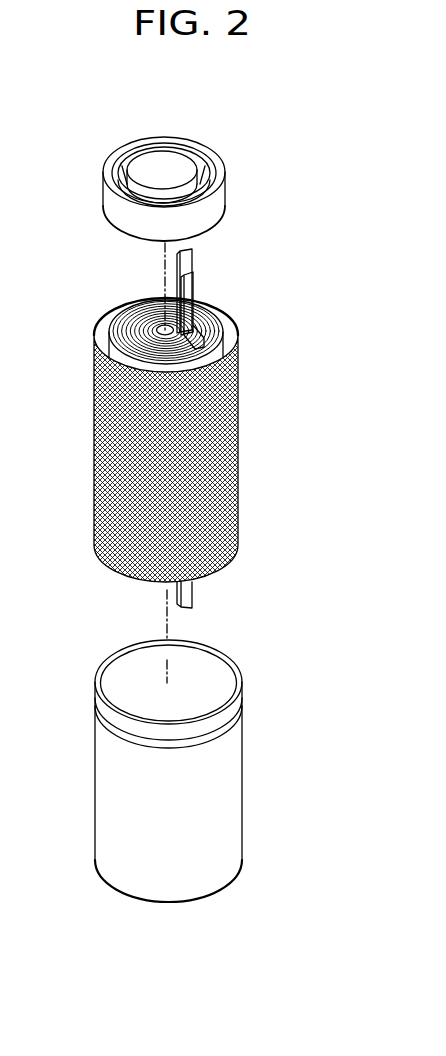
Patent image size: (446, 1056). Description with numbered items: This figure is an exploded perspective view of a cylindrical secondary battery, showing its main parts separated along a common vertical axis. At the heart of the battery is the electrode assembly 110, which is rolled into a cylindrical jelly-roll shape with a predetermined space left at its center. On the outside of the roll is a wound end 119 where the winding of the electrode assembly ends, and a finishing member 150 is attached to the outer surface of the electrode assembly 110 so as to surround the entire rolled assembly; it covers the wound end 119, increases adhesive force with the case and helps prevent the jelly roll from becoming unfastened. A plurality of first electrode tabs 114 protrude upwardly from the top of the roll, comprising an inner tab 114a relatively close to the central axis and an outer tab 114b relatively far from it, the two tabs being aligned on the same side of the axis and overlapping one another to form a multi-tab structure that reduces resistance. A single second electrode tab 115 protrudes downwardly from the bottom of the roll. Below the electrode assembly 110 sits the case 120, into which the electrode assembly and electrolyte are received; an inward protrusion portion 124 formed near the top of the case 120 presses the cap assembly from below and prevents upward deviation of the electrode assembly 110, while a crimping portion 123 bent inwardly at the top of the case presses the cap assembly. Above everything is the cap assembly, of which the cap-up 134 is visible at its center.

The electrode assembly 110 is at (246, 334).
The first electrode tabs 114 is at (247, 299).
The inner tab 114a is at (186, 262).
The outer tab 114b is at (188, 287).
The second electrode tab 115 is at (191, 590).
The wound end 119 is at (104, 337).
The case 120 is at (198, 771).
The crimping portion 123 is at (198, 171).
The inward protrusion portion 124 is at (237, 723).
The cap-up 134 is at (163, 165).
The finishing member 150 is at (222, 457).